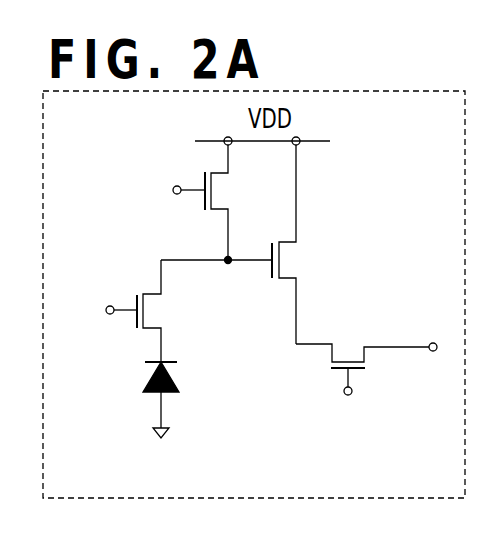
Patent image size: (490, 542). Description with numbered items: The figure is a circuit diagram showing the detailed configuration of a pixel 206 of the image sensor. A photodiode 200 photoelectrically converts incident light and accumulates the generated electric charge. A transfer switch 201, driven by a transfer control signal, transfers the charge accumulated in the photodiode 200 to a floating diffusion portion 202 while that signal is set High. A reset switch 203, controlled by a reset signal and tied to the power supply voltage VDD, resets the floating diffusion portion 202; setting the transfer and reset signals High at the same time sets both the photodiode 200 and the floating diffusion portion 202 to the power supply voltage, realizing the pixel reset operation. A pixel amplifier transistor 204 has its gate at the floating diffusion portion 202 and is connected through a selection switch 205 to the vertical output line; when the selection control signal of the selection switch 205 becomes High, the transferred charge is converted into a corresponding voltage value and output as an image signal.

The photodiode 200 is at (180, 380).
The transfer switch 201 is at (140, 294).
The floating diffusion portion 202 is at (229, 265).
The reset switch 203 is at (203, 173).
The pixel amplifier transistor 204 is at (281, 241).
The selection switch 205 is at (368, 368).
The pixel 206 is at (414, 90).